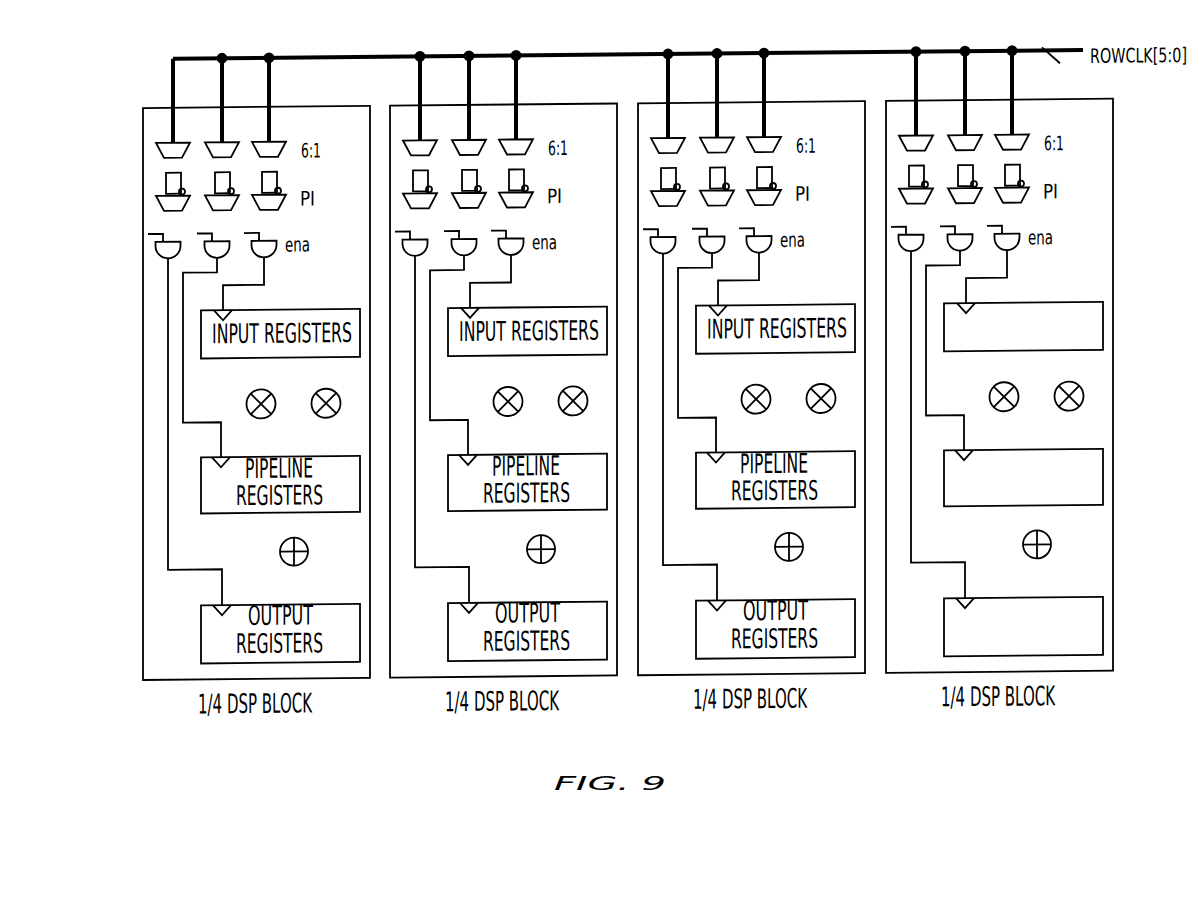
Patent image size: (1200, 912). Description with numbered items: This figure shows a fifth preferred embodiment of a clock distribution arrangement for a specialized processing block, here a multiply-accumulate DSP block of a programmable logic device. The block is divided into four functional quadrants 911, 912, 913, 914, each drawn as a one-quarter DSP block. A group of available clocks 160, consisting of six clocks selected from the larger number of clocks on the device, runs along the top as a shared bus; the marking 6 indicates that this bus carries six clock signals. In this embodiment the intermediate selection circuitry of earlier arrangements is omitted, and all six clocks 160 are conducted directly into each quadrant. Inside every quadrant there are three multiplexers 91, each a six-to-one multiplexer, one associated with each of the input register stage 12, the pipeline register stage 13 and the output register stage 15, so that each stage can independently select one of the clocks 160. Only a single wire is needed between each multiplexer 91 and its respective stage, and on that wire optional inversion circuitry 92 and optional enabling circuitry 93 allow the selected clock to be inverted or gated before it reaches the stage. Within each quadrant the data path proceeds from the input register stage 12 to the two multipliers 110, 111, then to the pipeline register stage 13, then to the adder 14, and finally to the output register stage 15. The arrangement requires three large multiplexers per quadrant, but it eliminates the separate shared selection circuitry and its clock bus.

The bus width indicator (six row clock signals) 6 is at (1050, 39).
The input register stage 12 is at (1047, 326).
The pipeline register stage 13 is at (1047, 475).
The adder 14 is at (308, 551).
The output register stage 15 is at (1047, 623).
The multiplexer 91 is at (262, 141).
The inversion circuitry 92 is at (261, 210).
The enabling circuitry 93 is at (257, 256).
The multiplier 110 is at (266, 418).
The multiplier 111 is at (330, 418).
The group of available clocks 160 is at (987, 57).
The quadrant 911 is at (1065, 679).
The quadrant 912 is at (817, 679).
The quadrant 913 is at (569, 679).
The quadrant 914 is at (322, 679).